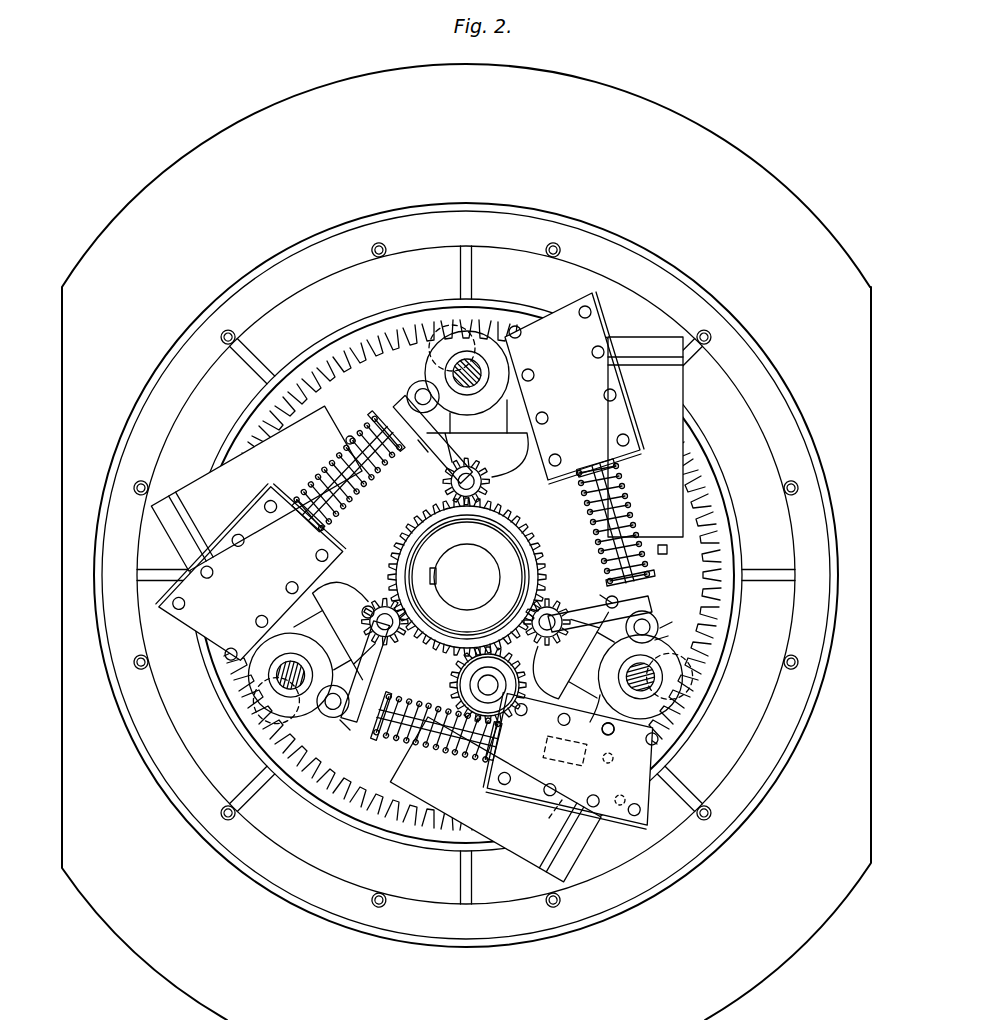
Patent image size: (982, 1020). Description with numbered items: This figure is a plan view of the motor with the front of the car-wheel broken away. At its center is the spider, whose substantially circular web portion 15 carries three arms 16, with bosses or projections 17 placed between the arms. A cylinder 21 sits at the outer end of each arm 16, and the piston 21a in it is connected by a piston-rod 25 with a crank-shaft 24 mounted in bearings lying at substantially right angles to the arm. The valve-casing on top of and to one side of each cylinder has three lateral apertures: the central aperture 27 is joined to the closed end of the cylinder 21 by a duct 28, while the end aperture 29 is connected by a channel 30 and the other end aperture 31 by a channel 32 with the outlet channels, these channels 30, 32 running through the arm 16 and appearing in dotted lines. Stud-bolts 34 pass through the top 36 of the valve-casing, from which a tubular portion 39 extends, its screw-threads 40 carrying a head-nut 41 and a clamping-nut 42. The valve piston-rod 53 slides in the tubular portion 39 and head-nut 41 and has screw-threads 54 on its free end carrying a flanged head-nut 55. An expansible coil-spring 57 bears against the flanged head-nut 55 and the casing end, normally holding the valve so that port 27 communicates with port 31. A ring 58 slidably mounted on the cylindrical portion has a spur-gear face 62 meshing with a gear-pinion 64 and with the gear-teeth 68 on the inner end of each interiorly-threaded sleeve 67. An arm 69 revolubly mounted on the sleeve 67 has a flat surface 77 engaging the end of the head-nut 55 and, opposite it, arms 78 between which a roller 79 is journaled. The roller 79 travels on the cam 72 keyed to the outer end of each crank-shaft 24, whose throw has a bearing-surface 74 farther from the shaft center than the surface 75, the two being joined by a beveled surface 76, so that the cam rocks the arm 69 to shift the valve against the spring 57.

The web portion 15 is at (440, 470).
The arms 16 is at (530, 670).
The bosses or projections 17 is at (460, 566).
The cylinder 21 is at (194, 488).
The piston 21a is at (384, 836).
The crank-shaft 24 is at (268, 738).
The piston-rod 25 is at (418, 697).
The central aperture 27 is at (605, 734).
The duct 28 is at (549, 818).
The end aperture 29 is at (590, 722).
The channel 30 is at (547, 758).
The end aperture 31 is at (613, 759).
The channel 32 is at (462, 600).
The stud-bolts 34 is at (535, 378).
The top of the valve-casing 36 is at (556, 330).
The tubular portion 39 is at (596, 465).
The screw-threads 40 is at (340, 452).
The head-nut 41 is at (395, 413).
The clamping-nut 42 is at (346, 438).
The piston-rod 53 is at (667, 550).
The screw-threads 54 is at (606, 582).
The flanged head-nut 55 is at (418, 385).
The expansible coil-spring 57 is at (305, 500).
The ring 58 is at (517, 530).
The spur-gear face 62 is at (386, 575).
The gear-pinion 64 is at (492, 645).
The interiorly-threaded sleeve 67 is at (490, 484).
The gear-teeth 68 is at (425, 557).
The arm 69 is at (475, 606).
The cam 72 is at (470, 345).
The bearing-surface 74 is at (262, 710).
The bearing-surface 75 is at (258, 724).
The beveled surface 76 is at (668, 636).
The flat surface 77 is at (672, 622).
The arms 78 is at (484, 549).
The roller 79 is at (460, 553).